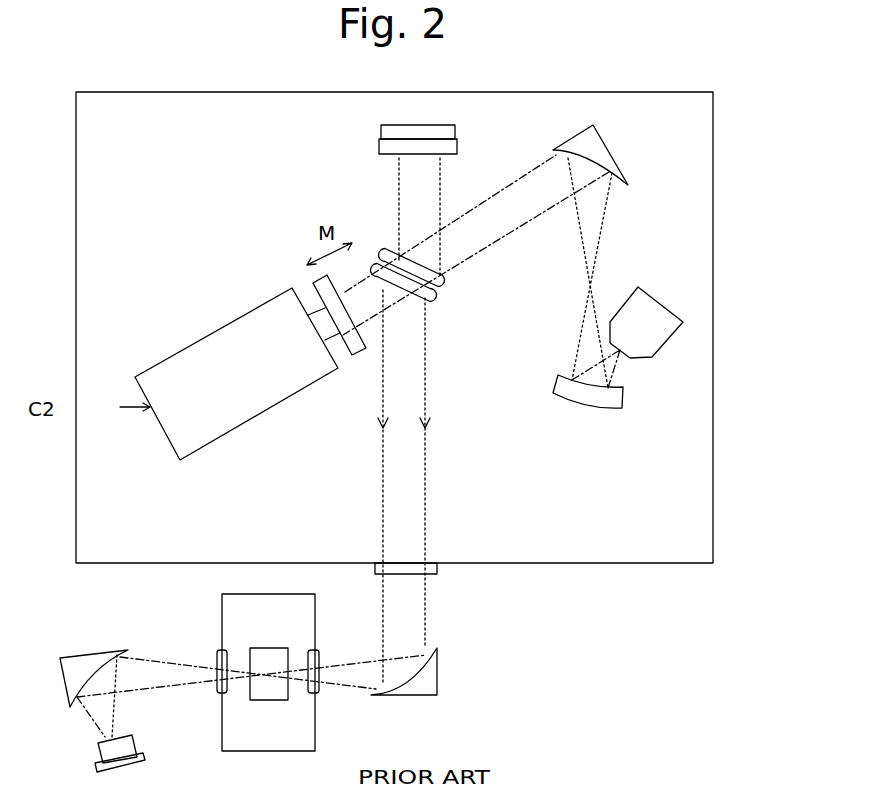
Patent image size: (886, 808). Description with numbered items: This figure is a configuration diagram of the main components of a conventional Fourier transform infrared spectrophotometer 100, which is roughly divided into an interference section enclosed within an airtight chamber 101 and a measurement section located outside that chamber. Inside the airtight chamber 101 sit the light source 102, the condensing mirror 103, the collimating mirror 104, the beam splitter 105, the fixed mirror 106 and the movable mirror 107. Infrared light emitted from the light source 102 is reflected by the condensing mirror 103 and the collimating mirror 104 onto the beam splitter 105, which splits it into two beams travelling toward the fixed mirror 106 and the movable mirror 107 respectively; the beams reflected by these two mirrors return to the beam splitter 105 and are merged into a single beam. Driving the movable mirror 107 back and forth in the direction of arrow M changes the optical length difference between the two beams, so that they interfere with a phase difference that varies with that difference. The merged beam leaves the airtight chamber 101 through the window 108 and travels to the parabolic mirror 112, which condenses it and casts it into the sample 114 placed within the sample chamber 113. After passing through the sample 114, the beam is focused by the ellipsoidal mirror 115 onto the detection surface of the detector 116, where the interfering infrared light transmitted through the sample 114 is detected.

The Fourier transform infrared spectrophotometer 100 is at (801, 82).
The airtight chamber 101 is at (714, 247).
The light source 102 is at (657, 302).
The condensing mirror 103 is at (624, 399).
The collimating mirror 104 is at (603, 143).
The beam splitter 105 is at (442, 294).
The fixed mirror 106 is at (458, 145).
The movable mirror 107 is at (311, 282).
The window 108 is at (438, 568).
The parabolic mirror 112 is at (438, 682).
The sample chamber 113 is at (221, 612).
The sample 114 is at (268, 647).
The ellipsoidal mirror 115 is at (94, 655).
The detector 116 is at (96, 752).